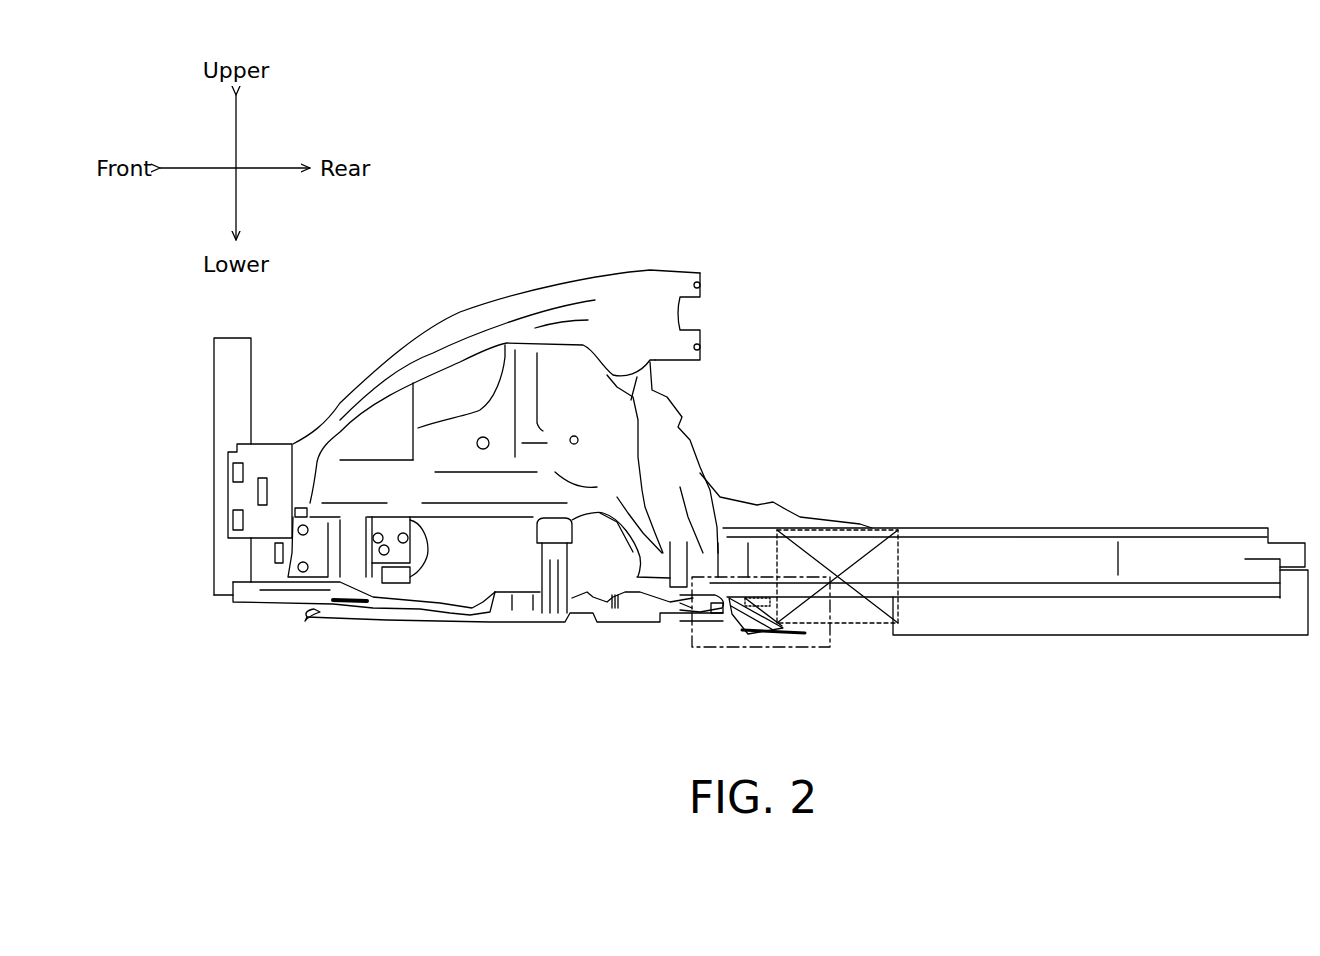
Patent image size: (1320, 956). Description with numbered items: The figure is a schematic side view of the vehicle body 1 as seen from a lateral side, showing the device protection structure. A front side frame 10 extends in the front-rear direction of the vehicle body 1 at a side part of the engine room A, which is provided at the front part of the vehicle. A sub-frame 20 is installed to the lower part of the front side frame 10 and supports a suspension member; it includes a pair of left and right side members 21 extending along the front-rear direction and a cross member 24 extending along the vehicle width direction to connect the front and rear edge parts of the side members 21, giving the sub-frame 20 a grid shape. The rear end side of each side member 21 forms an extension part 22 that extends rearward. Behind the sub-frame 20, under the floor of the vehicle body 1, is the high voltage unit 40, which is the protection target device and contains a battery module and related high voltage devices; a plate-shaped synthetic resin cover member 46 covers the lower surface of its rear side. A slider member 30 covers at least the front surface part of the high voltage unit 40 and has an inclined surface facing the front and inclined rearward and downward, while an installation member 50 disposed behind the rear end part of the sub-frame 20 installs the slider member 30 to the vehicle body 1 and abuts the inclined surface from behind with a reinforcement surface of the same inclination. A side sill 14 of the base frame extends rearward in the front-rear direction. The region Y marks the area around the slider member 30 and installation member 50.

The vehicle body 1 is at (918, 350).
The front side frame 10 is at (505, 305).
The engine room A is at (391, 432).
The sub-frame 20 is at (420, 625).
The side member 21 is at (502, 611).
The extension part 22 is at (667, 604).
The cross member 24 is at (587, 624).
The slider member 30 is at (758, 634).
The high voltage unit 40 is at (867, 543).
The cover member 46 is at (973, 621).
The installation member 50 is at (762, 597).
The side sill 14 is at (1210, 594).
The region Y is at (815, 648).